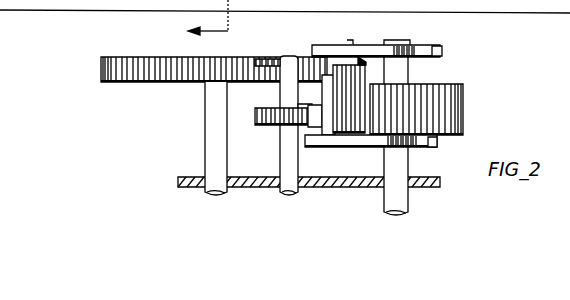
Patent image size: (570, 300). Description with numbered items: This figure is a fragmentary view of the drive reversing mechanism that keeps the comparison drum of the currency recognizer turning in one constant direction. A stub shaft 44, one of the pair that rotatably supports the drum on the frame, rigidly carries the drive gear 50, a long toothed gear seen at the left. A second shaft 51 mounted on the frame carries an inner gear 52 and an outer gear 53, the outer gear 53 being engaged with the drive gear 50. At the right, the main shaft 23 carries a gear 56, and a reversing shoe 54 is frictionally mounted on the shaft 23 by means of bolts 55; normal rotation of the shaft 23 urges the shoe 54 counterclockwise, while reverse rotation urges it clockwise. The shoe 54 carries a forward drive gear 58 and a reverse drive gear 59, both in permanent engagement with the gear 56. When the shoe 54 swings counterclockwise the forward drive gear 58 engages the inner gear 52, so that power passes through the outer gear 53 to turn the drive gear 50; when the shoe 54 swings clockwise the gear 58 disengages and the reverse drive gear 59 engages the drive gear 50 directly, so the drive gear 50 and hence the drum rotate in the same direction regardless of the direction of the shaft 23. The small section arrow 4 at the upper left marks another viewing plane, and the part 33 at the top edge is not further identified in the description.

The section line 4- 4 is at (198, 21).
The shaft 23 is at (398, 43).
The housing 33 is at (298, 5).
The stub shaft 44 is at (212, 135).
The drive gear 50 is at (113, 82).
The shaft 51 is at (292, 188).
The inner gear 52 is at (255, 113).
The outer gear 53 is at (265, 57).
The reversing shoe 54 is at (362, 52).
The bolts 55 is at (442, 52).
The gear 56 is at (456, 112).
The forward drive gear 58 is at (306, 107).
The reverse drive gear 59 is at (370, 80).